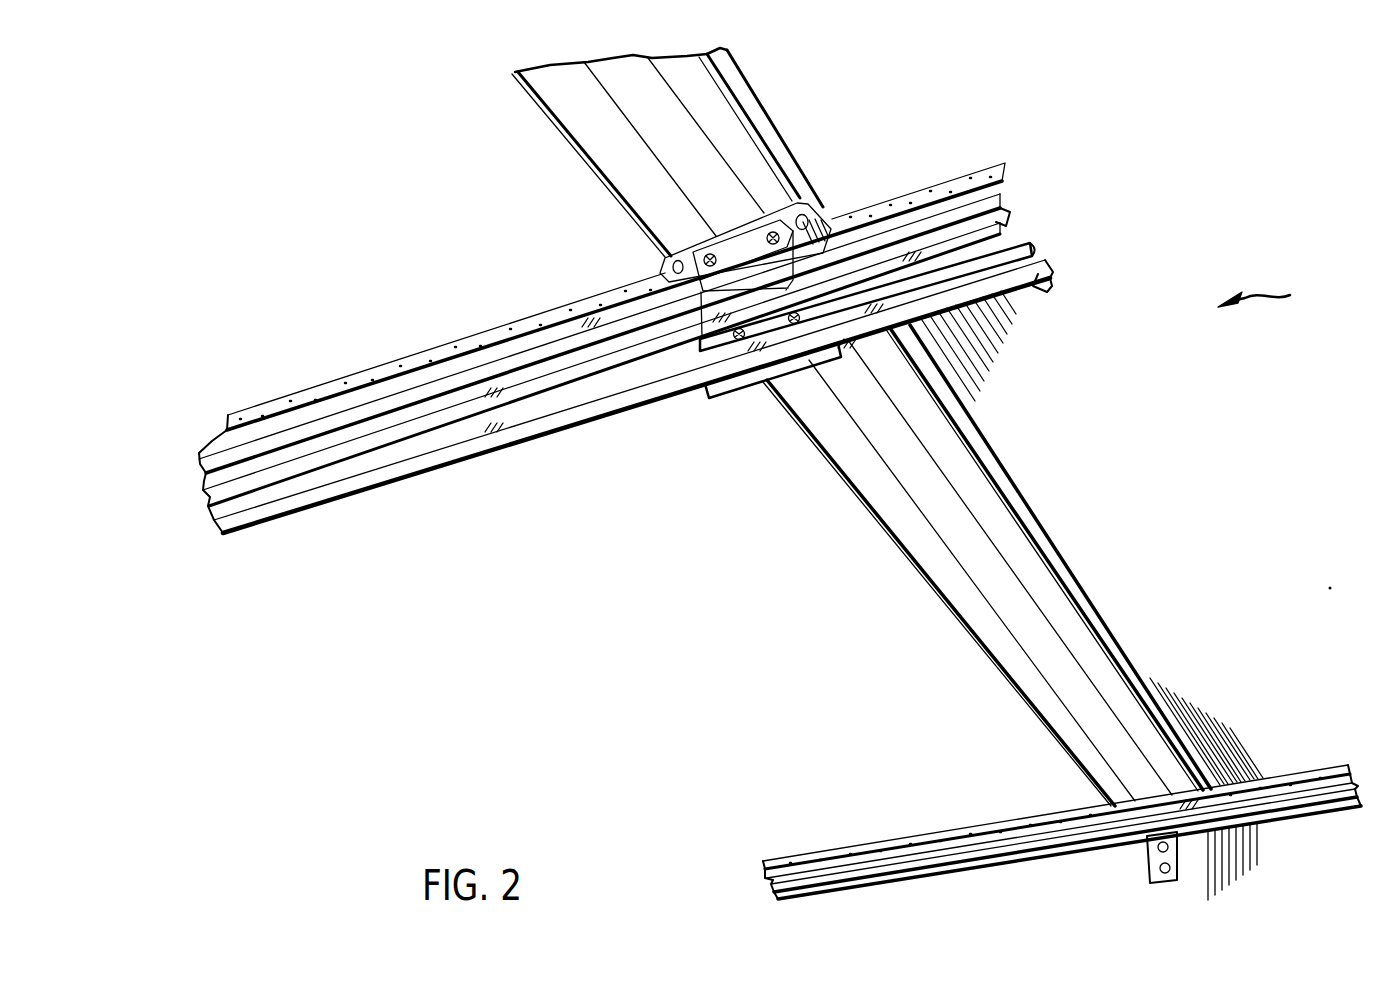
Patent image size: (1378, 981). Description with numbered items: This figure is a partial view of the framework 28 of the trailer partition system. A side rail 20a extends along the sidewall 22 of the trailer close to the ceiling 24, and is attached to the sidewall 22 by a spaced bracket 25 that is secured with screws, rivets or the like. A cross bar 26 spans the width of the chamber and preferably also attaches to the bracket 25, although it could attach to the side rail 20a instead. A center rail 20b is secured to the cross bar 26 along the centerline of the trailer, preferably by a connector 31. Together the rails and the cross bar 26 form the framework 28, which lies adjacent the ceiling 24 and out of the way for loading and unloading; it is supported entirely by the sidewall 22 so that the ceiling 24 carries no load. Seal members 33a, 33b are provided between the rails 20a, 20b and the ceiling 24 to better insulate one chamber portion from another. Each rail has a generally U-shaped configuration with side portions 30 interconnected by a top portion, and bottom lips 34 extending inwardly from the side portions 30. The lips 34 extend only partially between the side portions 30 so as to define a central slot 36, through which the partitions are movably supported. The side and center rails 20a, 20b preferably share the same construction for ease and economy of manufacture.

The side rail 20a is at (884, 862).
The center rail 20b is at (985, 220).
The sidewall 22 is at (1338, 884).
The ceiling 24 is at (1165, 464).
The bracket 25 is at (1180, 860).
The cross bar 26 is at (1053, 615).
The framework 28 is at (1276, 287).
The side portion 30 is at (430, 374).
The connector 31 is at (748, 252).
The seal member 33a is at (1302, 773).
The seal member 33b is at (945, 180).
The bottom lip 34 is at (1005, 232).
The central slot 36 is at (1024, 240).